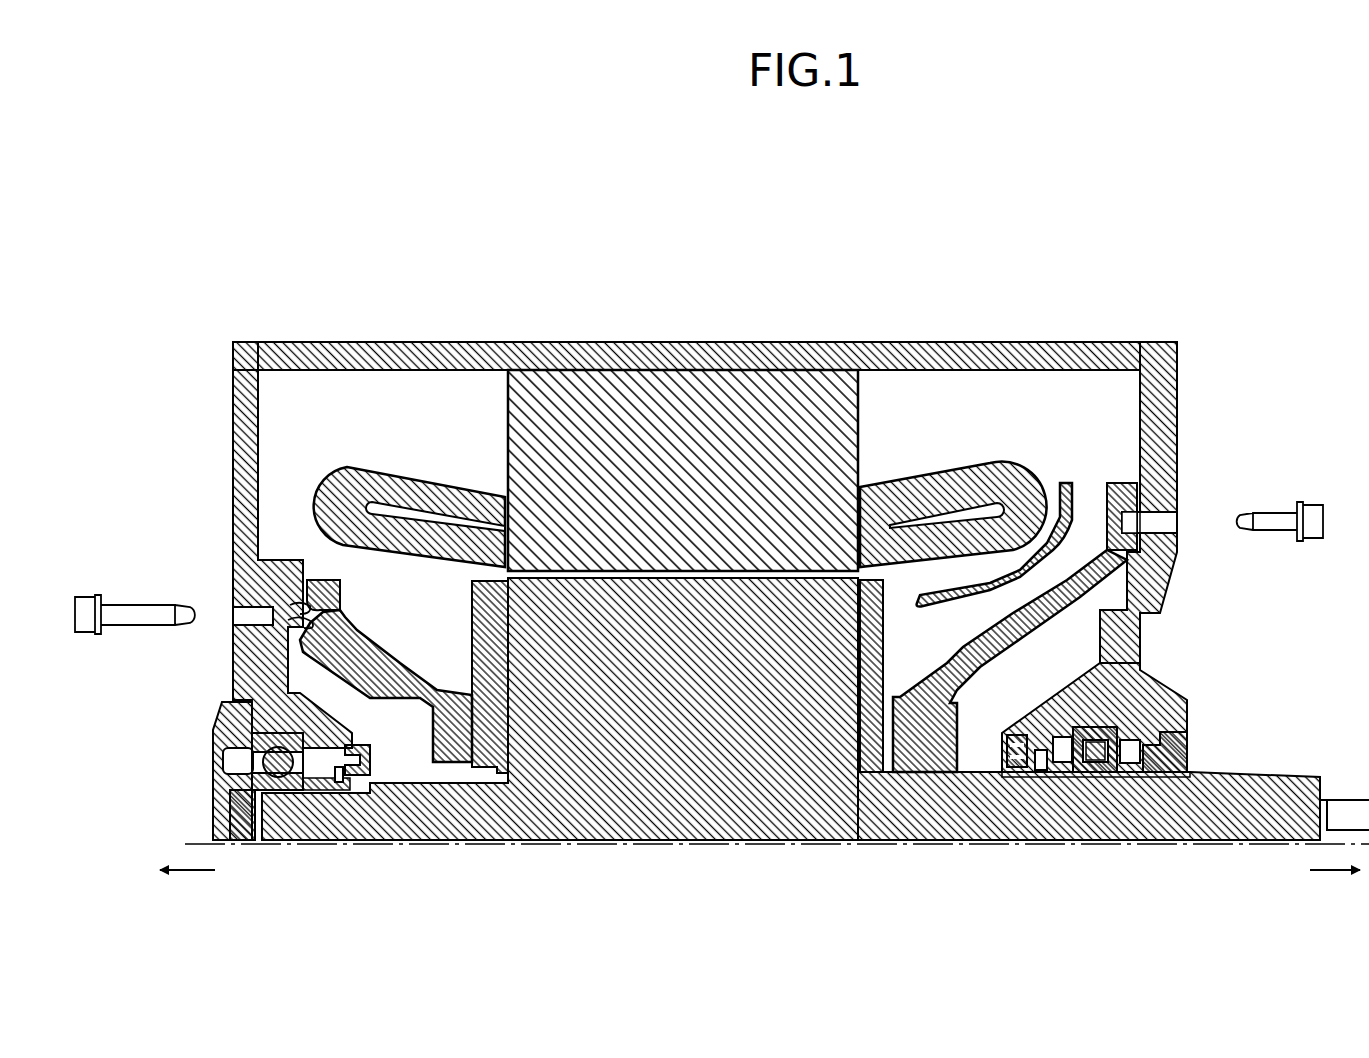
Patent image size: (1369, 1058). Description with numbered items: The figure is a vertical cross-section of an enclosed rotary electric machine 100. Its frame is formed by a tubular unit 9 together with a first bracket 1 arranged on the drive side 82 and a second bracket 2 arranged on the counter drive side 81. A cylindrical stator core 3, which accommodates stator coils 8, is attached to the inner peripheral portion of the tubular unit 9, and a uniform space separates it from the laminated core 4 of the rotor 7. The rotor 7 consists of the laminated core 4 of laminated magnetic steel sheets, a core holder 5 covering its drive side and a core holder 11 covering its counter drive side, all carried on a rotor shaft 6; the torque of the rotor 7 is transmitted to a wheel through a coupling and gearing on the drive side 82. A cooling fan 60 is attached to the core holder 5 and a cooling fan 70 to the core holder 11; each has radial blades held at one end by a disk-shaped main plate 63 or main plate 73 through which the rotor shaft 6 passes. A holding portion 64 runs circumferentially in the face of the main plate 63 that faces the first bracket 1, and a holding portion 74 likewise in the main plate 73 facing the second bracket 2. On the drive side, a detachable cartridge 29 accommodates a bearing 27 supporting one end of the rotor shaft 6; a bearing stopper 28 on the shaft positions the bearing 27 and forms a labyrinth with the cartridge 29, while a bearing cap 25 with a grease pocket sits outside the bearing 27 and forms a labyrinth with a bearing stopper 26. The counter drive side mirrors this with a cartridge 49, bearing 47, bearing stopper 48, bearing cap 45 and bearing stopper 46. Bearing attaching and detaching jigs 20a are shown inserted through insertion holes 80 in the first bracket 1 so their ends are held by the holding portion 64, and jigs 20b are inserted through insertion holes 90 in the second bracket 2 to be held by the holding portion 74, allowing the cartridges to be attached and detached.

The rotary electric machine 100 is at (746, 213).
The first bracket 1 is at (1166, 403).
The second bracket 2 is at (236, 398).
The stator core 3 is at (657, 386).
The laminated core 4 is at (717, 750).
The core holder 5 is at (872, 588).
The rotor shaft 6 is at (810, 835).
The rotor 7 is at (463, 612).
The stator coils 8 is at (956, 483).
The tubular unit 9 is at (760, 356).
The core holder 11 is at (497, 585).
The bearing attaching and detaching jig 20a is at (1318, 507).
The bearing attaching and detaching jig 20b is at (85, 600).
The bearing cap 25 is at (1179, 700).
The bearing stopper 26 is at (1178, 758).
The bearing 27 is at (1100, 778).
The bearing stopper 28 is at (1057, 772).
The cartridge 29 is at (1027, 728).
The bearing cap 45 is at (218, 768).
The bearing stopper 46 is at (238, 813).
The bearing 47 is at (283, 778).
The bearing stopper 48 is at (352, 784).
The cartridge 49 is at (352, 735).
The cooling fan 60 is at (1067, 475).
The main plate 63 is at (1120, 490).
The holding portion 64 is at (1138, 522).
The cooling fan 70 is at (330, 560).
The main plate 73 is at (358, 590).
The holding portion 74 is at (303, 603).
The insertion holes 80 is at (1154, 537).
The counter drive side 81 is at (187, 886).
The drive side 82 is at (1335, 886).
The insertion holes 90 is at (300, 620).